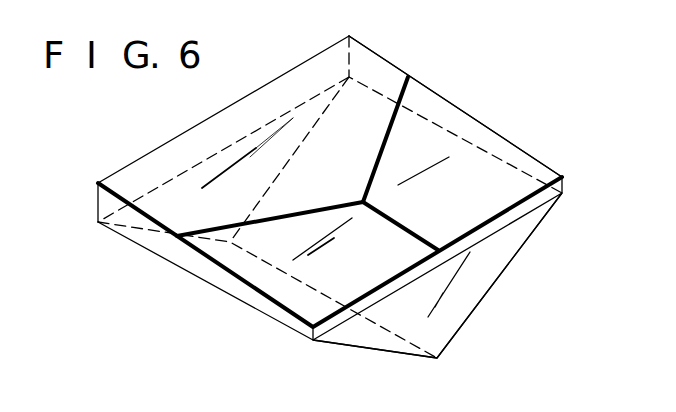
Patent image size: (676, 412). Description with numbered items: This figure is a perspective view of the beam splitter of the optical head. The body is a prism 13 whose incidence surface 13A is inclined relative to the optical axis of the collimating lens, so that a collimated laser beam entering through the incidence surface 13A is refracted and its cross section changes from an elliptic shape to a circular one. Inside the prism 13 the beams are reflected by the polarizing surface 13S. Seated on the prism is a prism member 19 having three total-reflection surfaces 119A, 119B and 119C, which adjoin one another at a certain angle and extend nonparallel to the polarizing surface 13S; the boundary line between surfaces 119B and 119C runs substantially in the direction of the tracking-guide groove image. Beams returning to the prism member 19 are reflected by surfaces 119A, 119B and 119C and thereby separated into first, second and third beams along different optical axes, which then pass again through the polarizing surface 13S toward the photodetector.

The prism 13 is at (483, 283).
The polarizing surface 13S is at (535, 199).
The incidence surface 13A is at (369, 350).
The prism member 19 is at (173, 156).
The total-reflection surface 119A is at (379, 72).
The total-reflection surface 119B is at (233, 268).
The total-reflection surface 119C is at (457, 119).